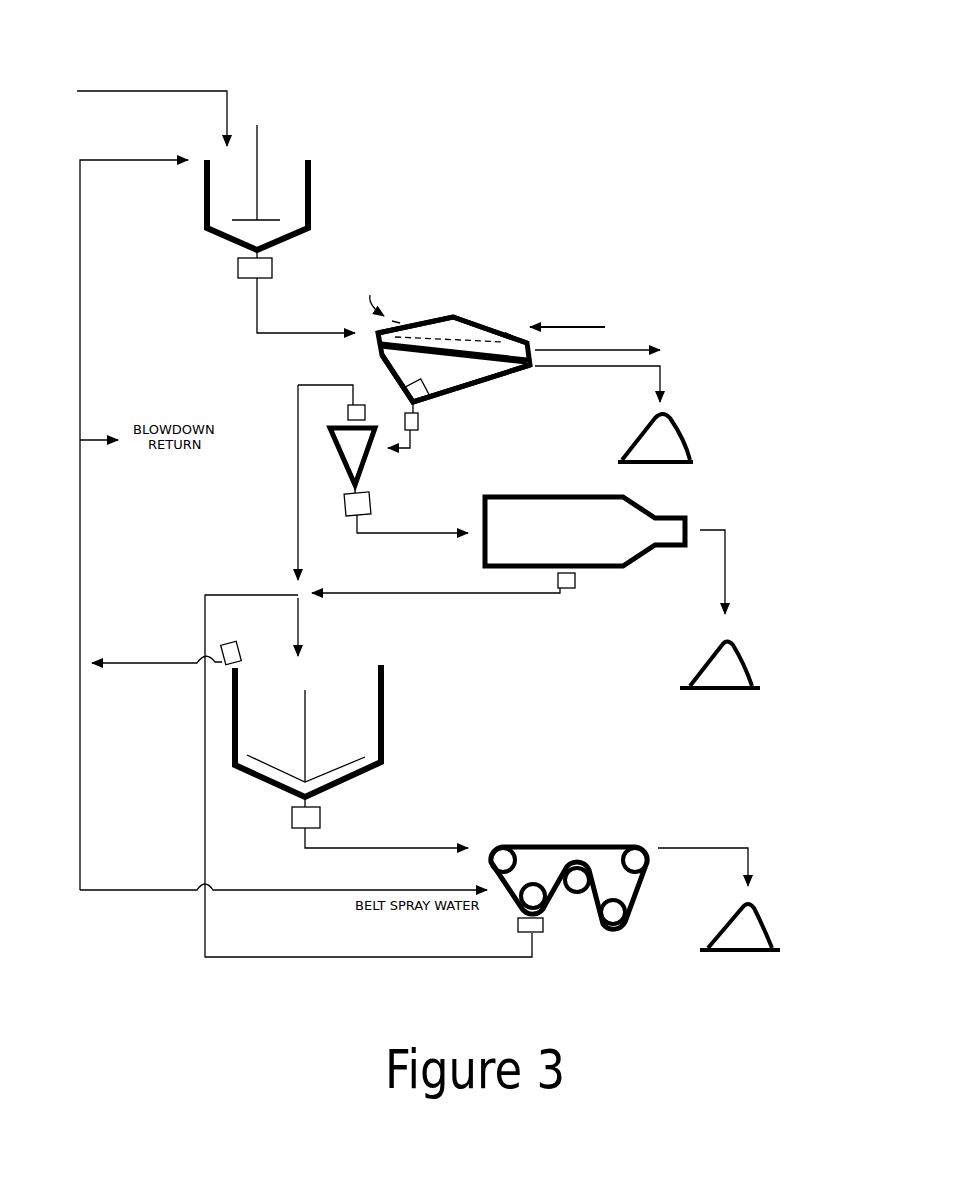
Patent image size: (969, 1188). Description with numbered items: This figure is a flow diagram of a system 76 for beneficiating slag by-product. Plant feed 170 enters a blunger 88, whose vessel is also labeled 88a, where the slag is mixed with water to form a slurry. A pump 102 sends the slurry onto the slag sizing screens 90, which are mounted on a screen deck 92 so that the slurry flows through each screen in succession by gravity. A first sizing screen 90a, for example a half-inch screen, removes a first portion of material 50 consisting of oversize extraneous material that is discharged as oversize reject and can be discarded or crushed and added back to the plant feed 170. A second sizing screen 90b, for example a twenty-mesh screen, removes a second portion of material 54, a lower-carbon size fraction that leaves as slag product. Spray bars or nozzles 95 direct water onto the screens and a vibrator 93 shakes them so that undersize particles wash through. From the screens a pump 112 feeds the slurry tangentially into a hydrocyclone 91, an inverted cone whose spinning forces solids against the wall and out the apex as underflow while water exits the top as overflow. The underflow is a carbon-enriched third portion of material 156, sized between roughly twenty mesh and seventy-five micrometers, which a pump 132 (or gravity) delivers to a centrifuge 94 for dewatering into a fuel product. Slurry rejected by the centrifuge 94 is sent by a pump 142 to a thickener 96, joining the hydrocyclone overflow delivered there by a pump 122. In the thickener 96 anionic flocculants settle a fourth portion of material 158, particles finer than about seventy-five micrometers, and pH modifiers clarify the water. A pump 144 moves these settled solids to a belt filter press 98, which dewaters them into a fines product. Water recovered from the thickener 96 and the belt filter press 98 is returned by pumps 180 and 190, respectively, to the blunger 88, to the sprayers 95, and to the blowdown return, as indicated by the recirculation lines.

The plant feed 170 is at (187, 63).
The system 76 is at (532, 70).
The blunger 88 is at (312, 190).
The blundger vessel wall 88a is at (207, 195).
The pump 102 is at (272, 268).
The slag sizing screens 90 is at (412, 325).
The first sizing screen 90a is at (445, 340).
The second sizing screen 90b is at (517, 377).
The screen deck 92 is at (505, 333).
The spray bars or nozzles 95 is at (505, 301).
The vibrator 93 is at (410, 387).
The pump 112 is at (418, 420).
The pump 122 is at (348, 411).
The hydrocyclone 91 is at (339, 448).
The pump 132 is at (370, 505).
The centrifuge 94 is at (638, 505).
The pump 142 is at (575, 580).
The first portion of material 50 is at (678, 340).
The second portion of material 54 is at (670, 410).
The third portion of material 156 is at (742, 660).
The pump 180 is at (228, 643).
The thickener 96 is at (385, 688).
The pump 144 is at (322, 815).
The belt filter press 98 is at (655, 838).
The pump 190 is at (545, 923).
The fourth portion of material 158 is at (762, 920).